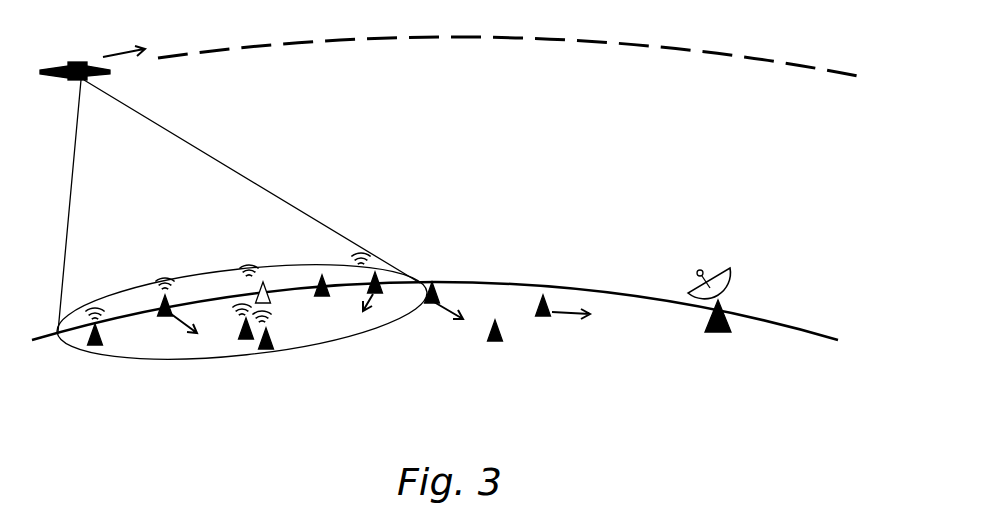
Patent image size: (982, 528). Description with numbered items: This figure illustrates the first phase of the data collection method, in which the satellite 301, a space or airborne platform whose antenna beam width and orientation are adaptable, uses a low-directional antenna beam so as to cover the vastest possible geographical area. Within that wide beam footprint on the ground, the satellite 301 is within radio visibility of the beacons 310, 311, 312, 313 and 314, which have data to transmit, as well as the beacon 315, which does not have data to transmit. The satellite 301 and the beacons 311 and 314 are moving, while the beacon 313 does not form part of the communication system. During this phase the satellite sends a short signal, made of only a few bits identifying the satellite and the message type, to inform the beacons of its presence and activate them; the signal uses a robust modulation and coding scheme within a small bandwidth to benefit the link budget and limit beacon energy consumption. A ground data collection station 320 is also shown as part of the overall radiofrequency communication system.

The satellite 301 is at (72, 58).
The beacon 310 is at (89, 350).
The beacon 311 is at (165, 317).
The beacon 312 is at (245, 341).
The beacon 313 is at (273, 304).
The beacon 314 is at (387, 294).
The beacon 315 is at (320, 296).
The ground data collection station 320 is at (719, 335).